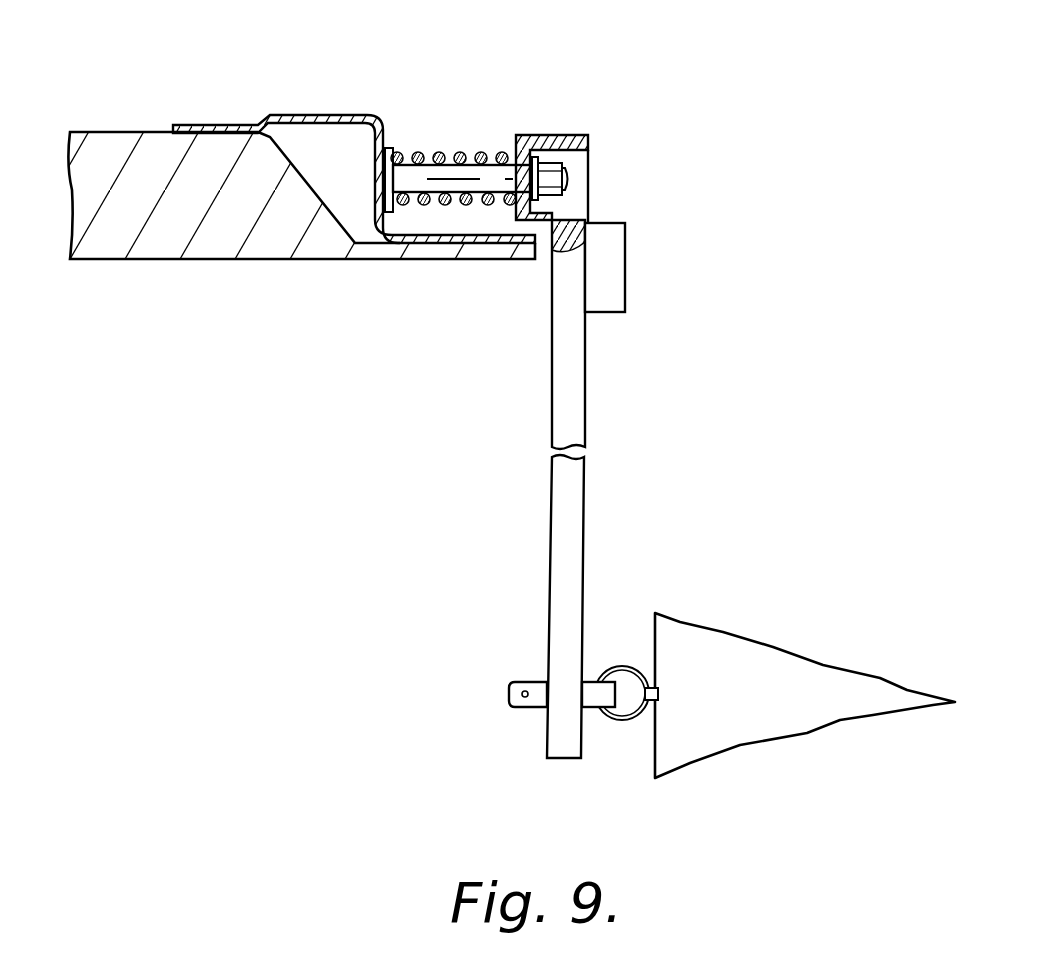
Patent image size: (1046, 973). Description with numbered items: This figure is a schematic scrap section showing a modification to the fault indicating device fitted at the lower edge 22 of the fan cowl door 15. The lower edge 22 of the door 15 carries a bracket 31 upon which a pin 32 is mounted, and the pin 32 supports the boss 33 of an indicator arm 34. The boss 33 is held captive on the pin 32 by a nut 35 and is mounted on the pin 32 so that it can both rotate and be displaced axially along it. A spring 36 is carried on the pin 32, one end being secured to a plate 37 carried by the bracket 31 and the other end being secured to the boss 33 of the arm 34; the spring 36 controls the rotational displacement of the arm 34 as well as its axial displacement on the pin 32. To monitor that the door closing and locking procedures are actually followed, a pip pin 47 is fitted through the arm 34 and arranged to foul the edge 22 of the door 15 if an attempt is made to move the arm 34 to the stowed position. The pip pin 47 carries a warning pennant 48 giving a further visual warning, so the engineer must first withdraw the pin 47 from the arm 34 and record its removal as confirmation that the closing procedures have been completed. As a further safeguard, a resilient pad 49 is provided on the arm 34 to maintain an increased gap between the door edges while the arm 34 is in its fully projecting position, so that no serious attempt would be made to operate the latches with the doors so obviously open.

The fan cowl door 15 is at (283, 268).
The lower edge 22 is at (546, 262).
The bracket 31 is at (320, 117).
The pin 32 is at (468, 178).
The boss 33 is at (568, 135).
The indicator arm 34 is at (565, 347).
The nut 35 is at (560, 153).
The spring 36 is at (436, 154).
The plate 37 is at (388, 150).
The pip pin 47 is at (523, 680).
The warning pennant 48 is at (713, 647).
The resilient pad 49 is at (603, 262).